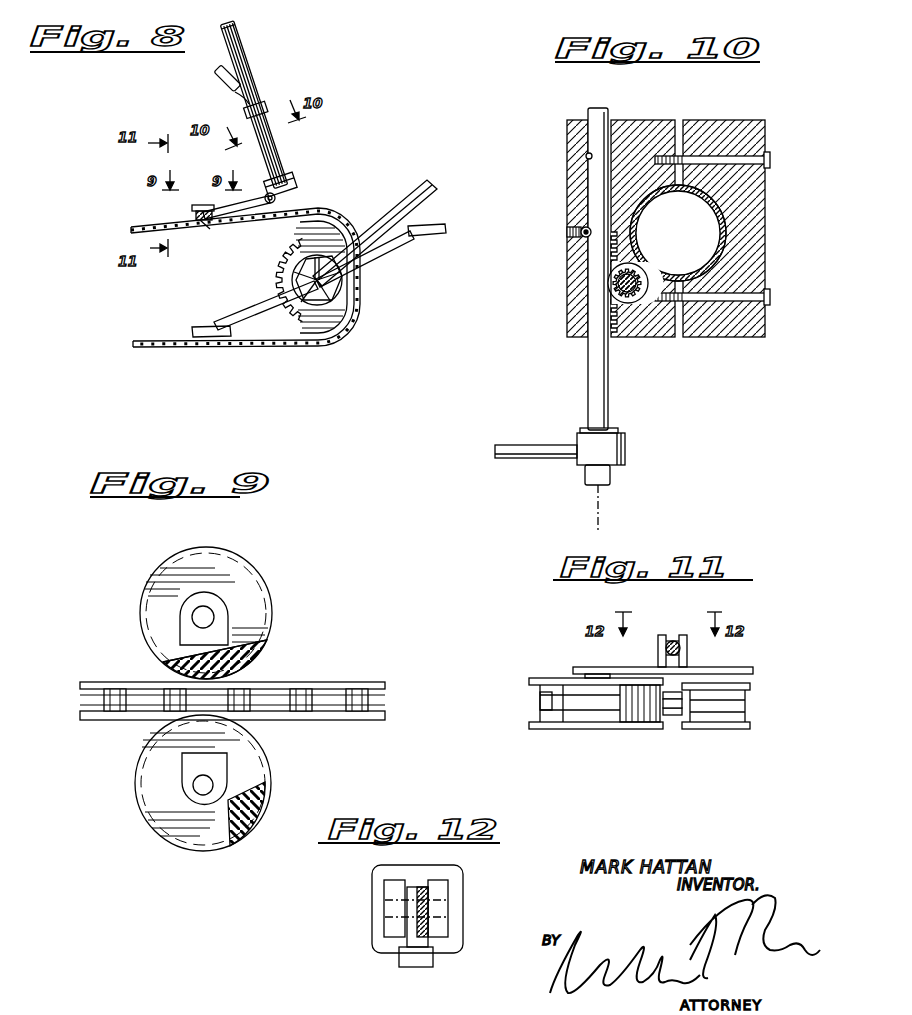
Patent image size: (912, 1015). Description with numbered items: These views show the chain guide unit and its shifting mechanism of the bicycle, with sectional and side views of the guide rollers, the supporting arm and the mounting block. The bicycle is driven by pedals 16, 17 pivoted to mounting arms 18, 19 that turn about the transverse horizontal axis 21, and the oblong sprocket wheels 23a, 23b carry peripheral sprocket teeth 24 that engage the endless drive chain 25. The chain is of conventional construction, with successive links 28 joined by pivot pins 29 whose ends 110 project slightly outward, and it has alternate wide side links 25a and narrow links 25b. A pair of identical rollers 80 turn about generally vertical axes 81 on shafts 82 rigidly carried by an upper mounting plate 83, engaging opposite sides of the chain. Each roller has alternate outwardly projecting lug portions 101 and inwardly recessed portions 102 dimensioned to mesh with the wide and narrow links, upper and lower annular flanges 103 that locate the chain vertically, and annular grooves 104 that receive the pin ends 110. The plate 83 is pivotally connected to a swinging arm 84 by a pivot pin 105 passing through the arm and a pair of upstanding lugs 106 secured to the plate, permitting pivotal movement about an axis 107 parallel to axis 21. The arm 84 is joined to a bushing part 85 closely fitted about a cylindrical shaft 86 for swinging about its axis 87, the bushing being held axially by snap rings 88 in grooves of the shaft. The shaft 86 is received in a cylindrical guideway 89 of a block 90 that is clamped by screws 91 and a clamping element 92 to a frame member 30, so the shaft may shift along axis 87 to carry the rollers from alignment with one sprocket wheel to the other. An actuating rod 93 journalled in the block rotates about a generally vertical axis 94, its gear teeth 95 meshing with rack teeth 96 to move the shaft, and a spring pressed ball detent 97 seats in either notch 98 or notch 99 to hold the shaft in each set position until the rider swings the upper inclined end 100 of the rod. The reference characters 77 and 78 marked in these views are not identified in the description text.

In FIG. 8, the pedal 16 is at (438, 224).
In FIG. 8, the pedal 17 is at (200, 338).
In FIG. 8, the mounting arm 18 is at (410, 241).
In FIG. 8, the mounting arm 19 is at (252, 318).
In FIG. 8, the transverse horizontal axis 21 is at (338, 283).
In FIG. 8, the oblong sprocket wheel 23a is at (318, 214).
In FIG. 8, the oblong sprocket wheel 23b is at (346, 216).
In FIG. 8, the sprocket teeth 24 is at (280, 265).
In FIG. 9, the drive chain 25 is at (377, 682).
In FIG. 11, the drive chain 25 is at (670, 730).
In FIG. 9, the side links 25a is at (300, 682).
In FIG. 9, the narrow links 25b is at (152, 712).
In FIG. 9, the links 28 is at (312, 721).
In FIG. 9, the pivot pins 29 is at (352, 721).
In FIG. 8, the frame member 30 is at (400, 183).
In FIG. 10, the frame member 30 is at (722, 221).
In FIG. 8, the drive assembly 77 is at (320, 177).
In FIG. 10, the drive assembly 77 is at (688, 358).
In FIG. 8, the bracket 78 is at (228, 222).
In FIG. 9, the rollers 80 is at (232, 570).
In FIG. 9, the roller axes 81 is at (206, 614).
In FIG. 11, the shafts 82 is at (598, 687).
In FIG. 9, the upper mounting plate 83 is at (230, 614).
In FIG. 11, the upper mounting plate 83 is at (755, 668).
In FIG. 12, the upper mounting plate 83 is at (373, 873).
In FIG. 8, the swinging arm 84 is at (237, 220).
In FIG. 10, the swinging arm 84 is at (540, 460).
In FIG. 11, the swinging arm 84 is at (672, 640).
In FIG. 12, the swinging arm 84 is at (400, 960).
In FIG. 8, the bushing part 85 is at (268, 205).
In FIG. 10, the bushing part 85 is at (626, 445).
In FIG. 10, the shaft 86 is at (612, 387).
In FIG. 10, the axis 87 is at (600, 500).
In FIG. 10, the snap rings 88 is at (618, 430).
In FIG. 10, the cylindrical guideway 89 is at (586, 333).
In FIG. 8, the block 90 is at (297, 182).
In FIG. 10, the block 90 is at (567, 323).
In FIG. 10, the screws 91 is at (767, 296).
In FIG. 10, the clamping element 92 is at (762, 250).
In FIG. 8, the actuating rod 93 is at (265, 136).
In FIG. 10, the actuating rod 93 is at (611, 286).
In FIG. 8, the vertical axis 94 is at (247, 114).
In FIG. 10, the vertical axis 94 is at (630, 278).
In FIG. 10, the gear teeth 95 is at (638, 336).
In FIG. 10, the rack teeth 96 is at (616, 254).
In FIG. 10, the spring pressed detent 97 is at (580, 230).
In FIG. 10, the notch 98 is at (585, 157).
In FIG. 10, the notch 99 is at (571, 240).
In FIG. 8, the upper inclined end 100 is at (213, 77).
In FIG. 9, the lug portions 101 is at (252, 668).
In FIG. 11, the lug portions 101 is at (555, 713).
In FIG. 9, the recessed portions 102 is at (258, 656).
In FIG. 11, the recessed portions 102 is at (598, 722).
In FIG. 9, the annular flanges 103 is at (158, 812).
In FIG. 11, the annular flanges 103 is at (538, 679).
In FIG. 11, the annular grooves 104 is at (540, 698).
In FIG. 8, the pivot pin 105 is at (194, 210).
In FIG. 11, the pivot pin 105 is at (688, 648).
In FIG. 12, the pivot pin 105 is at (424, 905).
In FIG. 11, the upstanding lugs 106 is at (683, 634).
In FIG. 12, the upstanding lugs 106 is at (388, 928).
In FIG. 11, the axis 107 is at (640, 652).
In FIG. 12, the axis 107 is at (354, 912).
In FIG. 9, the pin ends 110 is at (120, 681).